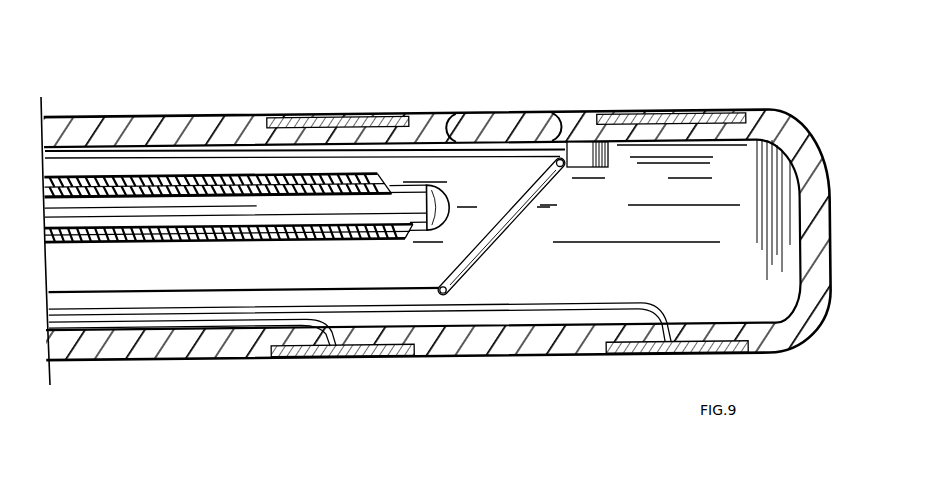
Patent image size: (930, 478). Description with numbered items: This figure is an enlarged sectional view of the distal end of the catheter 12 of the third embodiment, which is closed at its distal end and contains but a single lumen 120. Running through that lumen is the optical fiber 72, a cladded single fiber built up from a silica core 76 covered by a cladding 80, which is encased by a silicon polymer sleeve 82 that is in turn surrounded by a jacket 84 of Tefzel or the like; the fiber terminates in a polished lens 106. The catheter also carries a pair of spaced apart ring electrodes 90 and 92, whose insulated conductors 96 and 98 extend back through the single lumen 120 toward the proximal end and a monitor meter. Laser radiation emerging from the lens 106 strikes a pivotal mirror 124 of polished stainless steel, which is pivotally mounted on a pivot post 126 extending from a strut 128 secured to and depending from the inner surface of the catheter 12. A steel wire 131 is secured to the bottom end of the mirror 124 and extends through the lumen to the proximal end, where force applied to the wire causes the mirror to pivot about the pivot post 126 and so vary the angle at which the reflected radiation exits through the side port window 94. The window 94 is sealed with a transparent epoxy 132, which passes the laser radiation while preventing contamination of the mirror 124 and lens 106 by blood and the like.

The catheter 12 is at (457, 363).
The optical fiber 72 is at (318, 163).
The core 76 is at (200, 205).
The cladding 80 is at (152, 250).
The sleeve 82 is at (115, 250).
The jacket 84 is at (83, 250).
The ring electrode 90 is at (358, 353).
The ring electrode 92 is at (620, 357).
The side port window 94 is at (512, 112).
The insulated conductor 96 is at (178, 318).
The insulated conductor 98 is at (537, 307).
The polished lens 106 is at (438, 195).
The single lumen 120 is at (713, 205).
The pivotal mirror 124 is at (498, 237).
The pivot post 126 is at (563, 168).
The strut 128 is at (610, 166).
The steel wire 131 is at (303, 286).
The transparent epoxy 132 is at (493, 120).